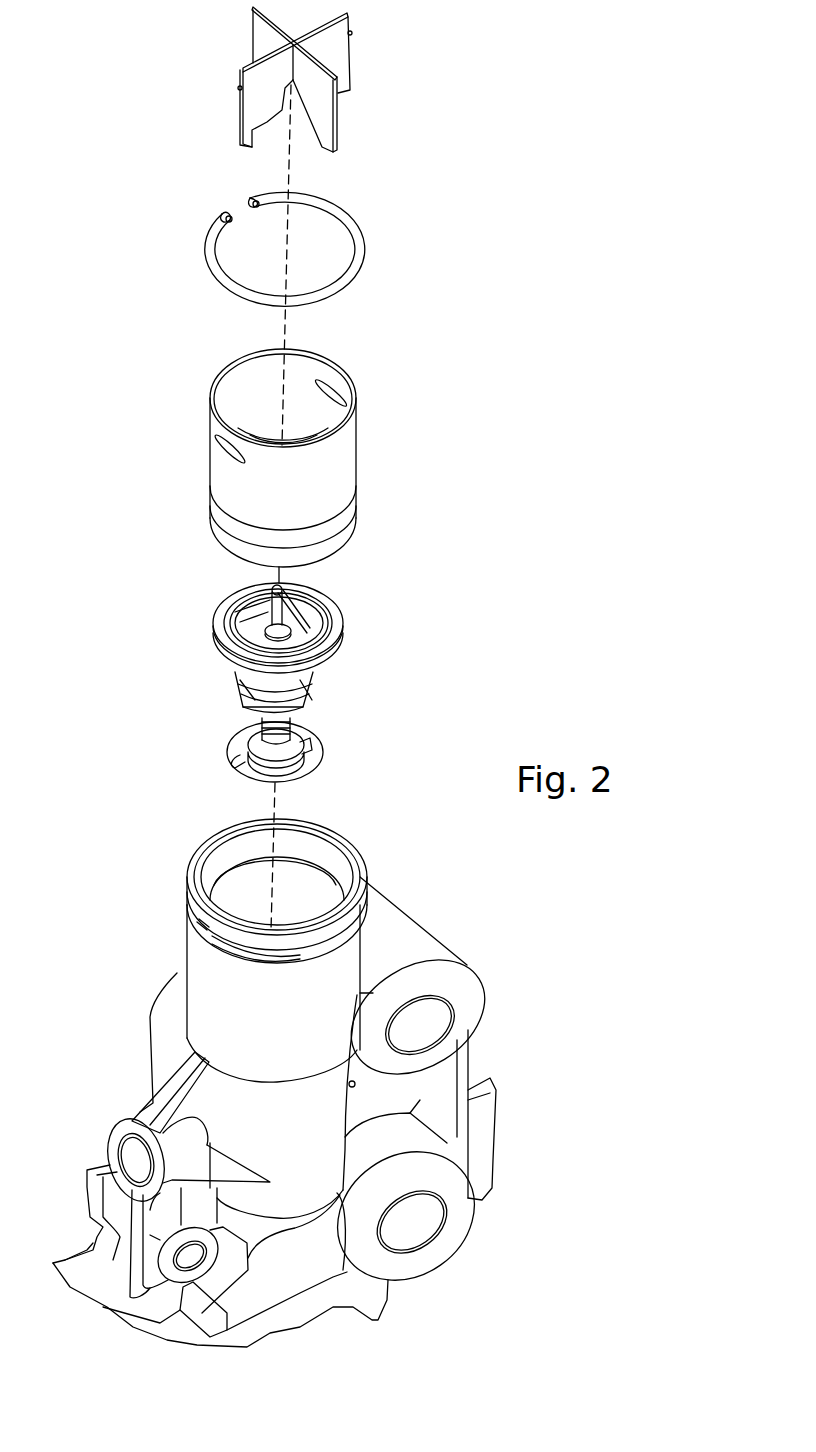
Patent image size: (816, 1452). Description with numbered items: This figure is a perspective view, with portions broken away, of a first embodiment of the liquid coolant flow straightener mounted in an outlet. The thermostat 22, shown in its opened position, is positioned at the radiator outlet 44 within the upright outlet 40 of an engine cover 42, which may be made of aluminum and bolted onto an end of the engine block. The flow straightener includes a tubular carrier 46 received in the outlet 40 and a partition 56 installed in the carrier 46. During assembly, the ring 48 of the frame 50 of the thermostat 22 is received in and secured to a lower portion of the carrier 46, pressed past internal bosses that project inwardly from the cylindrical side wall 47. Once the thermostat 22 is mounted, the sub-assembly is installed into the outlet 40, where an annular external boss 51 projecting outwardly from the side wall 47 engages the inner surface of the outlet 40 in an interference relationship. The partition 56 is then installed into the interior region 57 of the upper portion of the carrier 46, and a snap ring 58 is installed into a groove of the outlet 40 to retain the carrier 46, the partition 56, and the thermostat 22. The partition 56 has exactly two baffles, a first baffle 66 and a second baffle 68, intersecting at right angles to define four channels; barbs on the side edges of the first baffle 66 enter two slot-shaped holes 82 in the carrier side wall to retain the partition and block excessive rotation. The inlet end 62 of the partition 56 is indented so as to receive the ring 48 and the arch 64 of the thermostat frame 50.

The thermostat 22 is at (377, 655).
The outlet 40 is at (203, 962).
The engine cover 42 is at (172, 1005).
The radiator outlet 44 is at (290, 591).
The tubular carrier 46 is at (400, 413).
The cylindrical side wall 47 is at (338, 457).
The ring 48 is at (213, 627).
The frame 50 is at (350, 622).
The annular external boss 51 is at (337, 520).
The partition 56 is at (372, 91).
The interior region 57 is at (237, 393).
The snap ring 58 is at (360, 233).
The inlet end 62 is at (263, 128).
The arch 64 is at (284, 584).
The first baffle 66 is at (240, 107).
The second baffle 68 is at (335, 128).
The holes 82 is at (337, 382).